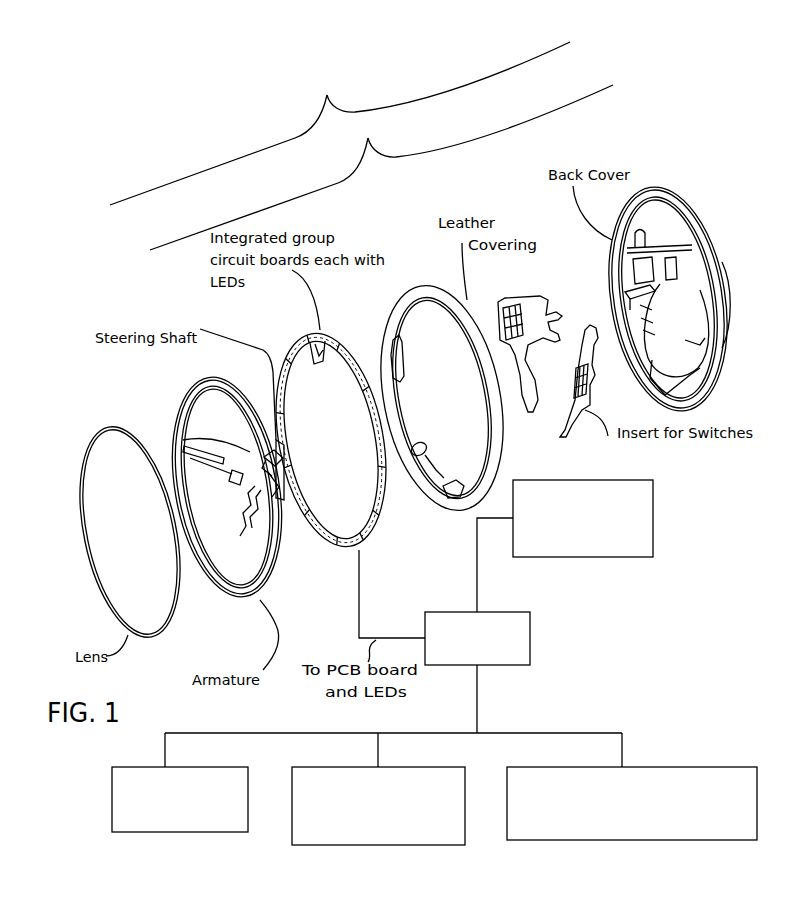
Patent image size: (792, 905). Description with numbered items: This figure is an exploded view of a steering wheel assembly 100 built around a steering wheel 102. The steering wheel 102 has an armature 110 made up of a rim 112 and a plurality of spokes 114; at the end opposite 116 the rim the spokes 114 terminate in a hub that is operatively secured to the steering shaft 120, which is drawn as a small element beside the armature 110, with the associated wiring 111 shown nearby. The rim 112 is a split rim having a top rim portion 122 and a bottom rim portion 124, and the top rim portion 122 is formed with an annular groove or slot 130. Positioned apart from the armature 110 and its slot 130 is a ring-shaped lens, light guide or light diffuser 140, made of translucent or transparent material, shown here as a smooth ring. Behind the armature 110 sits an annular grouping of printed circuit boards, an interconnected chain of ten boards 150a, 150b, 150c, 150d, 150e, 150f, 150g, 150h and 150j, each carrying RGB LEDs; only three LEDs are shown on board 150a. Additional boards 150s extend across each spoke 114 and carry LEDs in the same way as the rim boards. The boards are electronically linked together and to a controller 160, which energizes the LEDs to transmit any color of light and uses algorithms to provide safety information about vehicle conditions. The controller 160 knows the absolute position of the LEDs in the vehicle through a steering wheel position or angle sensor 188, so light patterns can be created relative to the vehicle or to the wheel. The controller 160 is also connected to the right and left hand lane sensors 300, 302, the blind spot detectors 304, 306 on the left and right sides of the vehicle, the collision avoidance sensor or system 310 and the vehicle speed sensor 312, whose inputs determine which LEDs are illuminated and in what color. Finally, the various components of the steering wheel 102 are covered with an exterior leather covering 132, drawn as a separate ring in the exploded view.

The steering wheel assembly 100 is at (340, 123).
The steering wheel 102 is at (381, 167).
The armature 110 is at (183, 392).
The wiring 111 is at (245, 516).
The rim 112 is at (239, 494).
The spoke 114 is at (190, 461).
The end opposite the rim 116 is at (232, 479).
The steering shaft 120 is at (270, 448).
The top rim portion 122 is at (239, 507).
The bottom rim portion 124 is at (239, 497).
The annular groove or slot 130 is at (222, 592).
The exterior leather covering 132 is at (426, 292).
The lens, light guide or light diffuser 140 is at (102, 427).
The printed circuit board 150a is at (332, 446).
The printed circuit board 150b is at (353, 450).
The printed circuit board 150c is at (353, 450).
The printed circuit board 150d is at (353, 450).
The printed circuit board 150e is at (344, 450).
The printed circuit board 150f is at (331, 450).
The printed circuit board 150g is at (331, 439).
The printed circuit board 150h is at (284, 419).
The printed circuit board 150j is at (332, 435).
The spoke printed circuit board 150s is at (172, 438).
The controller 160 is at (462, 656).
The steering wheel position or angle sensor 188 is at (603, 546).
The right hand lane sensor 300 is at (632, 803).
The left hand lane sensor 302 is at (632, 803).
The blind spot detector 304 is at (632, 803).
The blind spot detector 306 is at (752, 831).
The collision avoidance sensor or system 310 is at (389, 836).
The vehicle speed sensor 312 is at (226, 816).